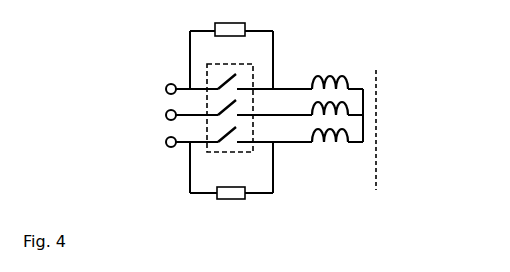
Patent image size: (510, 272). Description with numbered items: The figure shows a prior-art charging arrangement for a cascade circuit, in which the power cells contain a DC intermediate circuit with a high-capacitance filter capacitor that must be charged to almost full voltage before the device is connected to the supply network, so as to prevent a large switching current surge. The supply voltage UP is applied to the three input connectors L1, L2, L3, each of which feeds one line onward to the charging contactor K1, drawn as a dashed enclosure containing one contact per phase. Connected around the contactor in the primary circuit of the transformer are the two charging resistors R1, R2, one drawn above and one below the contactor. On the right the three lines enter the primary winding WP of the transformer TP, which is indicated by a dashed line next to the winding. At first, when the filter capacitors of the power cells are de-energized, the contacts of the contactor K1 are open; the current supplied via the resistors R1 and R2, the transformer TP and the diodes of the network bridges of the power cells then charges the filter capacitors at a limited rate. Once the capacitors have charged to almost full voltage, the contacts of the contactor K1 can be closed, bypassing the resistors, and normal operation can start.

The charging resistor R1 is at (230, 19).
The charging resistor R2 is at (231, 183).
The charging contactor K1 is at (230, 97).
The input connector L1 is at (158, 89).
The input connector L2 is at (158, 115).
The input connector L3 is at (158, 142).
The supply voltage UP is at (85, 103).
The primary winding WP is at (330, 97).
The transformer TP is at (377, 118).